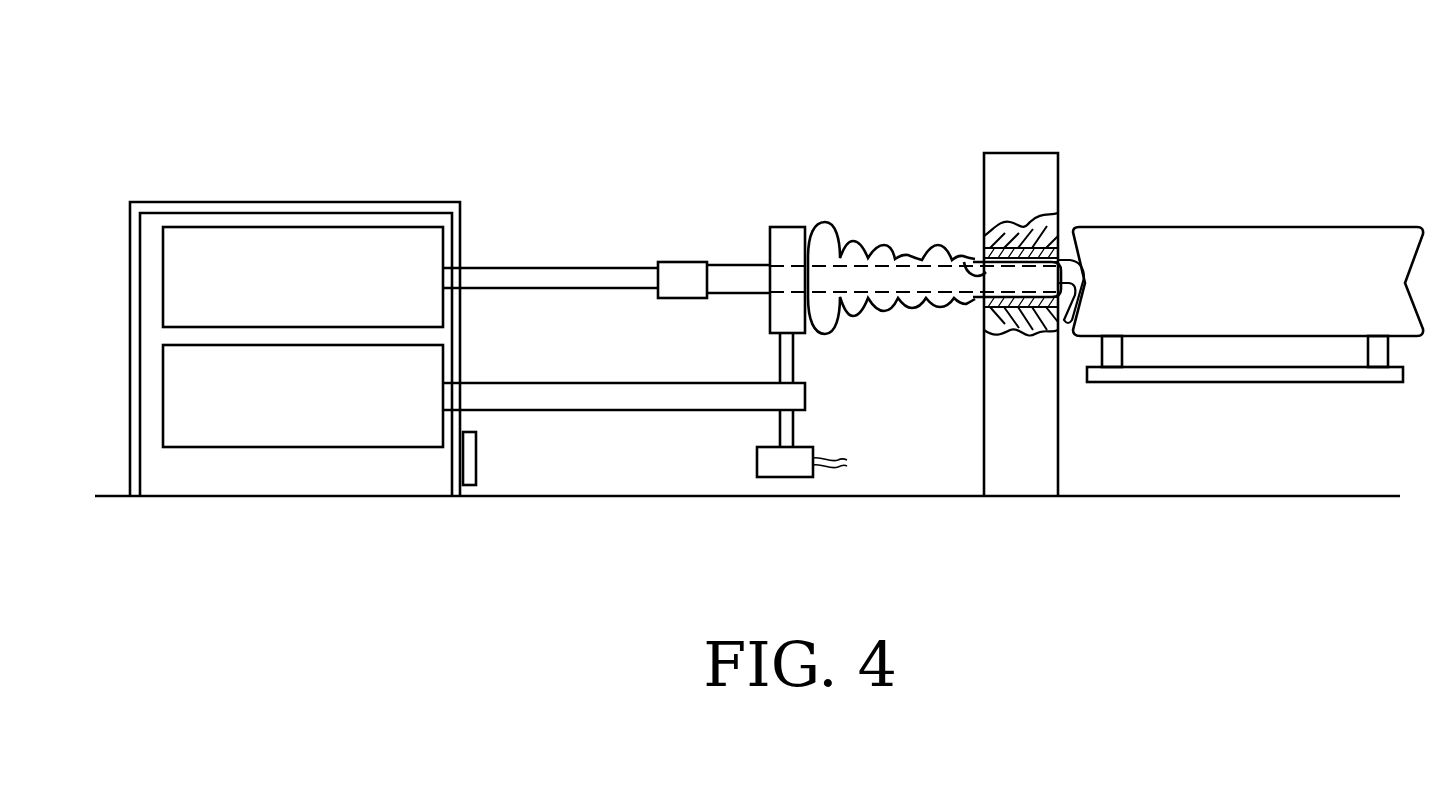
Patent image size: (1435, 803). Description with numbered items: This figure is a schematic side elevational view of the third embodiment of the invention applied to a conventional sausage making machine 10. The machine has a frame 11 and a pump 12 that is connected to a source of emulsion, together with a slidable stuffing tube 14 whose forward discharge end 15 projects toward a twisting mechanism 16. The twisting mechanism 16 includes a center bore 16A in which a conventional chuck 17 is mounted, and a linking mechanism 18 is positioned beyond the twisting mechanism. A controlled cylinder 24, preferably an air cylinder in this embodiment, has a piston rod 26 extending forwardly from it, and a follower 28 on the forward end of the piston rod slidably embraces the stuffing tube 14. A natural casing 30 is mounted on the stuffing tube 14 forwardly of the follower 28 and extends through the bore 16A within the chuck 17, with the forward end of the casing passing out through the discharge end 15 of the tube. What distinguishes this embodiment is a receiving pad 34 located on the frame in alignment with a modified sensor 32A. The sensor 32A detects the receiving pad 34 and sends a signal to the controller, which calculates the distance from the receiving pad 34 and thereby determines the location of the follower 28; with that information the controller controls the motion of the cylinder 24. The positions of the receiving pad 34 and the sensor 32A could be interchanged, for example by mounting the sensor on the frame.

The sausage making machine 10 is at (551, 146).
The frame 11 is at (918, 498).
The pump 12 is at (271, 257).
The stuffing tube 14 is at (605, 268).
The discharge end 15 is at (1082, 270).
The twisting mechanism 16 is at (1032, 443).
The center bore 16A is at (973, 270).
The chuck 17 is at (1028, 226).
The linking mechanism 18 is at (1262, 253).
The controlled cylinder 24 is at (271, 420).
The piston rod 26 is at (637, 397).
The follower 28 is at (787, 247).
The natural casing 30 is at (866, 245).
The sensor 32A is at (757, 458).
The receiving pad 34 is at (477, 459).